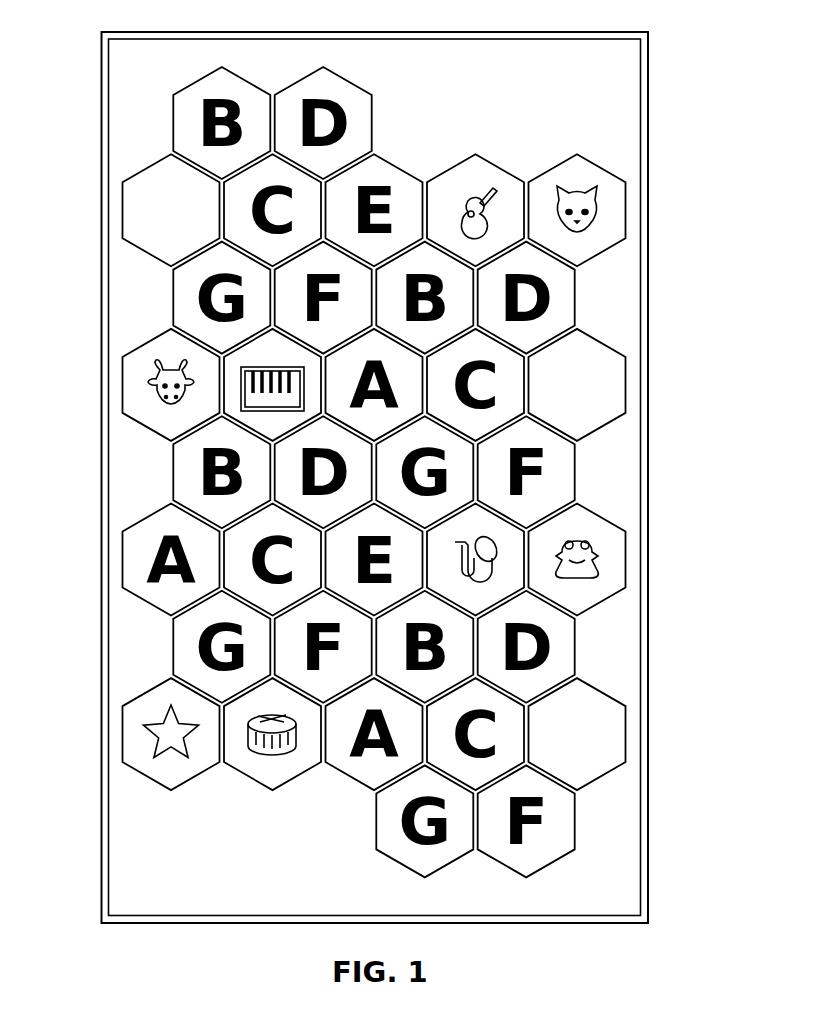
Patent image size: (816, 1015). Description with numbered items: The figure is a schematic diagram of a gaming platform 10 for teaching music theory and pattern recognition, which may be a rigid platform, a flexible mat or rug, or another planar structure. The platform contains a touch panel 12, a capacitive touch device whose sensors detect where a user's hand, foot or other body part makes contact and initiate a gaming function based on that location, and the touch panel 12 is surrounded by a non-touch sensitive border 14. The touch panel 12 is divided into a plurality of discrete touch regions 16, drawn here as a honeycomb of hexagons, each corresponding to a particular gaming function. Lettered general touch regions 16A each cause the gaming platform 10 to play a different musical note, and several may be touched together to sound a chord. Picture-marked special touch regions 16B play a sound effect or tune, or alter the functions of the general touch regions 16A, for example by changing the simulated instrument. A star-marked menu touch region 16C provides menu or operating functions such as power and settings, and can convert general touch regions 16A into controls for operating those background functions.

The gaming platform 10 is at (394, 475).
The touch panel 12 is at (135, 152).
The non-touch sensitive border 14 is at (106, 53).
The touch region 16 is at (613, 350).
The general touch region 16A is at (148, 240).
The special touch region 16B is at (606, 182).
The menu touch region 16C is at (146, 756).